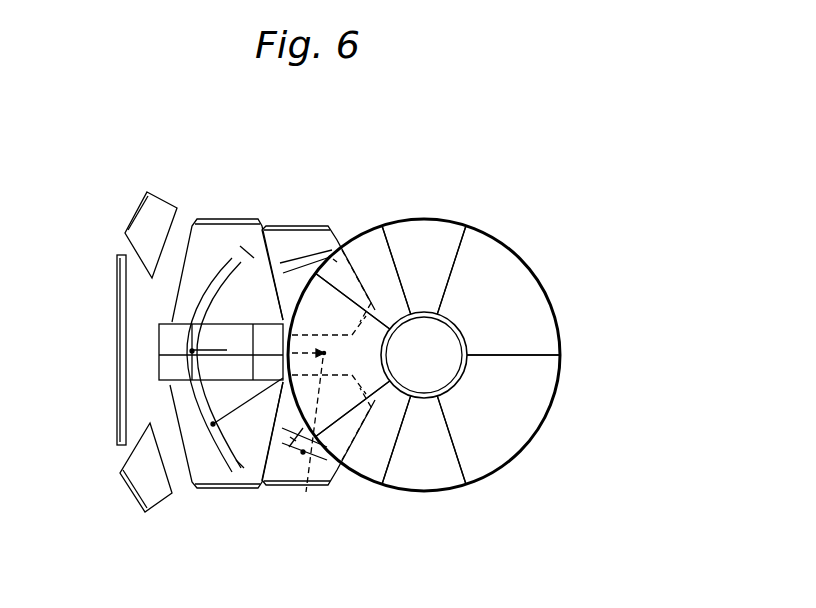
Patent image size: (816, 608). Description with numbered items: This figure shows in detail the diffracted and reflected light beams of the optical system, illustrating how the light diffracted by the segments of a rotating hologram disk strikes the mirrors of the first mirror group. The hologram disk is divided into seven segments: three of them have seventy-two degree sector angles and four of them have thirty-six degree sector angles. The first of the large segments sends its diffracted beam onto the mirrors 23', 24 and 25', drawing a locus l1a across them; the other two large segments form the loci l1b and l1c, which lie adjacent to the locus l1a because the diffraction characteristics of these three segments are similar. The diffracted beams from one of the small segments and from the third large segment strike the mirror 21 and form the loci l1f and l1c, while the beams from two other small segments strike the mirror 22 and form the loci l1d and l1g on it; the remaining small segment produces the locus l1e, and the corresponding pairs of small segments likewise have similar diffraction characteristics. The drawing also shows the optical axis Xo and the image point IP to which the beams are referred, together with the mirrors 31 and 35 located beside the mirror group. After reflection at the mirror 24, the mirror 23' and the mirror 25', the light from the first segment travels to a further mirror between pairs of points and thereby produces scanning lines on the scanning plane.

The mirror 21 is at (330, 487).
The mirror 22 is at (328, 223).
The mirror 23' is at (225, 480).
The mirror 24 is at (157, 381).
The mirror 25' is at (215, 248).
The reflecting mirror 31 is at (140, 512).
The reflecting mirror 35 is at (140, 202).
The locus l1a is at (233, 253).
The locus l1b is at (228, 264).
The locus l1c is at (258, 226).
The locus l1d is at (287, 260).
The light beam l1e is at (284, 440).
The locus l1f is at (310, 460).
The locus l1g is at (300, 256).
The image point IP is at (329, 404).
The optical axis Xo is at (105, 352).